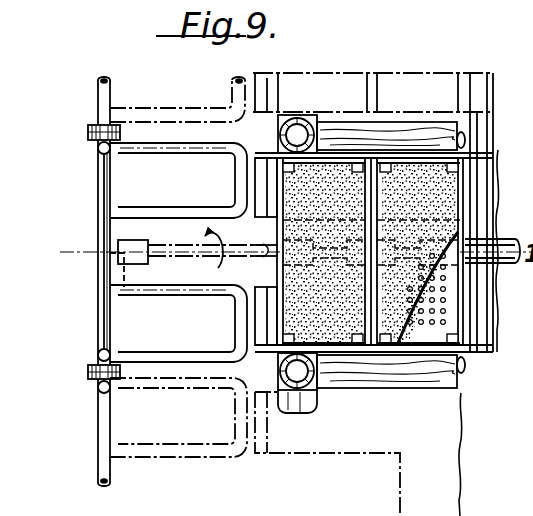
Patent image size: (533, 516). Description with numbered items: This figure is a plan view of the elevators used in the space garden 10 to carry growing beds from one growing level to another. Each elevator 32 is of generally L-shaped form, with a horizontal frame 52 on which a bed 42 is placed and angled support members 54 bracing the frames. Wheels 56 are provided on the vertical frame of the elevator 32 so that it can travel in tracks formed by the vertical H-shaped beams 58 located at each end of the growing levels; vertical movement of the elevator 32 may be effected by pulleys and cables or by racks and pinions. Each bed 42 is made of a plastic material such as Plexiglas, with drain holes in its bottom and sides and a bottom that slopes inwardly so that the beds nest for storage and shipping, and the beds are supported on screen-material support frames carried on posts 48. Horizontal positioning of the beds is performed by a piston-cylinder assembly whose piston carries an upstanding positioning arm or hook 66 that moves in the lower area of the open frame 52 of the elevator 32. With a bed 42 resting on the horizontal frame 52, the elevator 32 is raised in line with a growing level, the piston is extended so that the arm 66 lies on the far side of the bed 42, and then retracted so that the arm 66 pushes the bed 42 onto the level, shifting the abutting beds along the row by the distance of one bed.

The space garden 10 is at (50, 219).
The elevator 32 is at (96, 230).
The bed 42 is at (474, 190).
The post 48 is at (428, 158).
The horizontal frame 52 is at (238, 323).
The angled support member 54 is at (170, 356).
The wheel 56 is at (80, 132).
The vertical H-shaped beam 58 is at (124, 140).
The positioning arm 66 is at (120, 272).